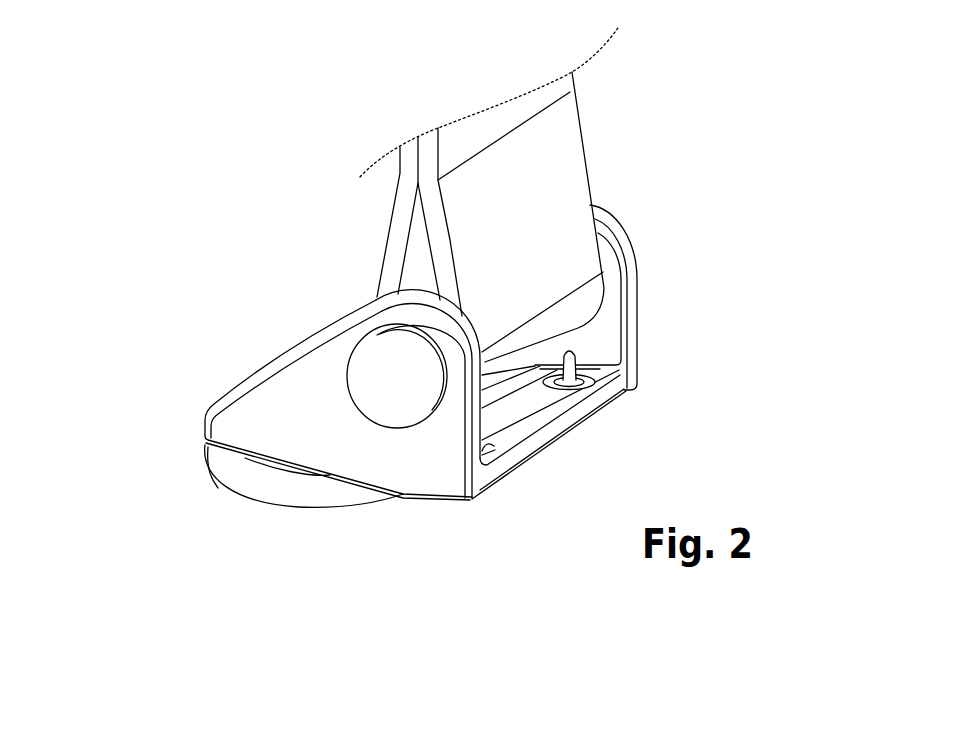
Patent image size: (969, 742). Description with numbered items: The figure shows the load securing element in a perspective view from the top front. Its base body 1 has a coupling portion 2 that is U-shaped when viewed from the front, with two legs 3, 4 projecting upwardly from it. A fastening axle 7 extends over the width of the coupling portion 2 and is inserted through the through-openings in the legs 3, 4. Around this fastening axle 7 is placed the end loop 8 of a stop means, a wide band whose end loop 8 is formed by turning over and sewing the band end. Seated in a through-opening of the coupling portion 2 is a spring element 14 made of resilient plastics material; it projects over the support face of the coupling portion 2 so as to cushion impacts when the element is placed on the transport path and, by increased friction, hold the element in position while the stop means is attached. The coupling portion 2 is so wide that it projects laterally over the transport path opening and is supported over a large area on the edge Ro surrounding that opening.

The base body 1 is at (274, 357).
The coupling portion 2 is at (532, 402).
The leg 3 is at (327, 373).
The leg 4 is at (605, 320).
The fastening axle 7 is at (397, 363).
The end loop 8 is at (552, 158).
The spring element 14 is at (603, 379).
The edge Ro is at (239, 478).